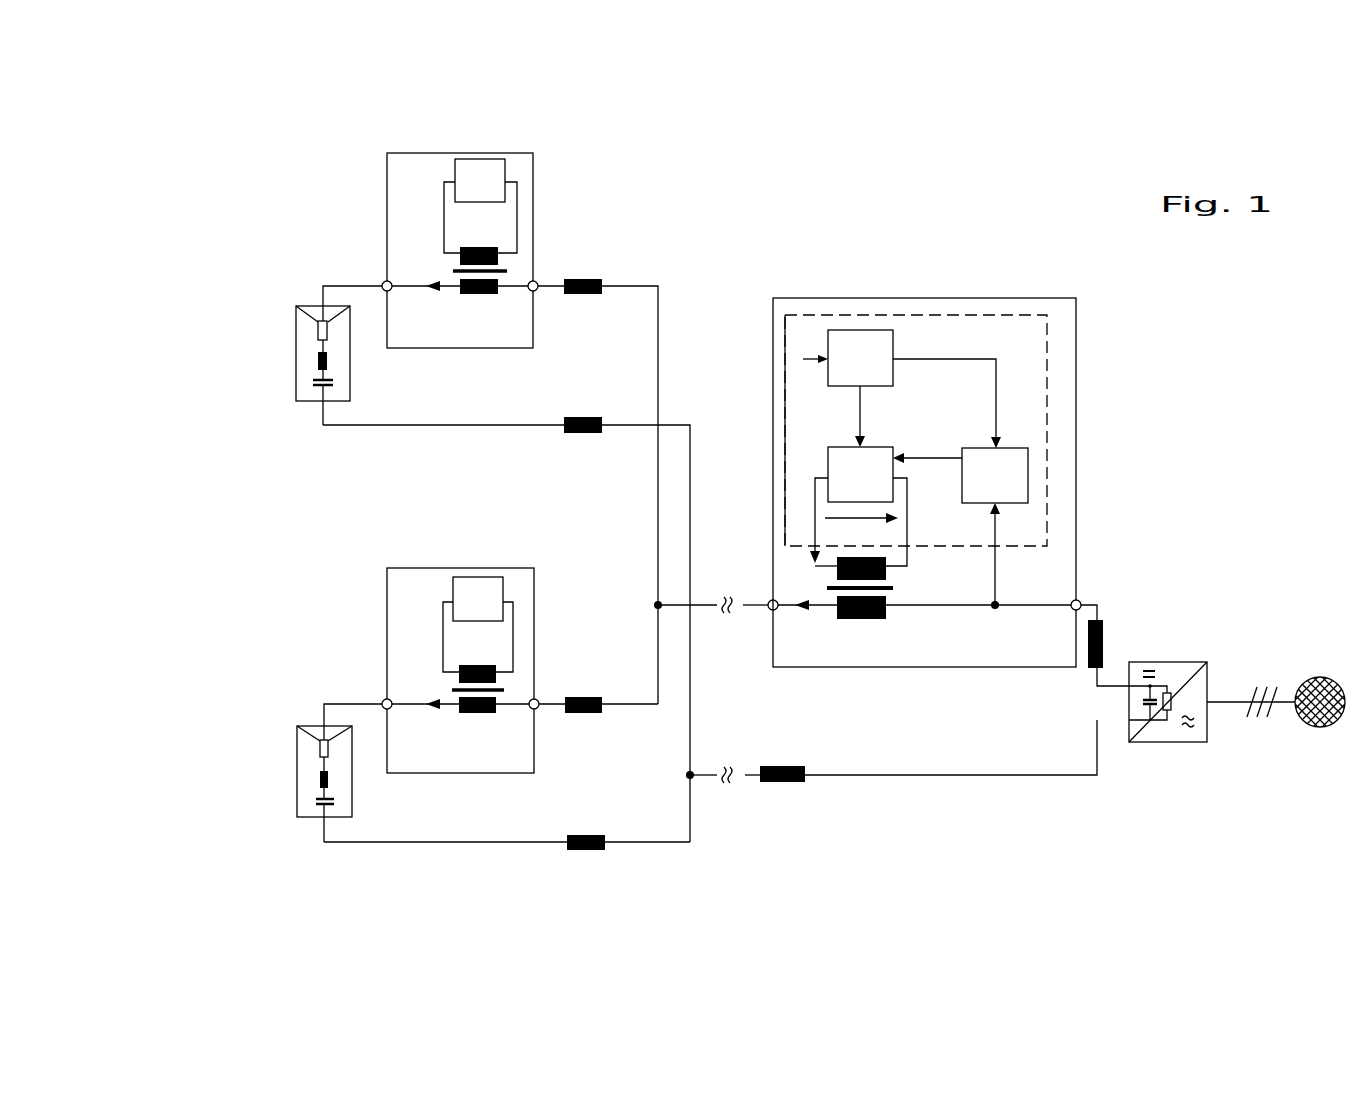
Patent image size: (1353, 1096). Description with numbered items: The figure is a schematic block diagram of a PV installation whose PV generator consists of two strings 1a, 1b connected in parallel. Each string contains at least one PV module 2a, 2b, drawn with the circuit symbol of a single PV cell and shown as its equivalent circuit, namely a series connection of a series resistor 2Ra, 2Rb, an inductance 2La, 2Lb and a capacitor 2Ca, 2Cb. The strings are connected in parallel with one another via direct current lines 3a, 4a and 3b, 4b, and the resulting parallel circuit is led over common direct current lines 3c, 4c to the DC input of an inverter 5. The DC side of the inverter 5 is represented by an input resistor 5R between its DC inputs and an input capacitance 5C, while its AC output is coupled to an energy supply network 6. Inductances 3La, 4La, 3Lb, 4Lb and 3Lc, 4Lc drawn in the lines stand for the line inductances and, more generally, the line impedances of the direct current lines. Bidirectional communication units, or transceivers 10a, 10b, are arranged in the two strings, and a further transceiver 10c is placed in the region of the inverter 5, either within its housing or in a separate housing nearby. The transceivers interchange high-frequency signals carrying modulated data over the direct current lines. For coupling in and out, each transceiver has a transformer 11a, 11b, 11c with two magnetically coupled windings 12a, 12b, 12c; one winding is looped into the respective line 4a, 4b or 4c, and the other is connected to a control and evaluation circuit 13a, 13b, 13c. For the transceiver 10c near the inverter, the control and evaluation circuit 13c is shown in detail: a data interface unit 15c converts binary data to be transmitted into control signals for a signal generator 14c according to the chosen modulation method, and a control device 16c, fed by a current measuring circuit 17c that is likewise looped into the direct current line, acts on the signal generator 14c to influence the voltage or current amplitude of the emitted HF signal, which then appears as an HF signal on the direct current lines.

The string 1a is at (296, 165).
The string 1b is at (309, 534).
The PV module 2a is at (296, 313).
The PV module 2b is at (297, 733).
The series resistor 2Ra is at (318, 333).
The series resistor 2Rb is at (320, 753).
The inductance 2La is at (318, 362).
The inductance 2Lb is at (320, 780).
The capacitor 2Ca is at (333, 382).
The capacitor 2Cb is at (334, 801).
The direct current line 3a is at (547, 426).
The direct current line 3b is at (550, 843).
The common direct current line 3c is at (1040, 776).
The inductance 3La is at (583, 417).
The inductance 3Lb is at (585, 835).
The inductance 3Lc is at (790, 783).
The direct current line 4a is at (552, 288).
The direct current line 4b is at (555, 706).
The common direct current line 4c is at (700, 606).
The inductance 4La is at (583, 279).
The inductance 4Lb is at (580, 698).
The inductance 4Lc is at (1103, 623).
The inverter 5 is at (1177, 662).
The input capacitance 5C is at (1143, 703).
The input resistor 5R is at (1171, 708).
The energy supply network 6 is at (1321, 678).
The transceiver 10a is at (505, 153).
The transceiver 10b is at (495, 568).
The transceiver 10c is at (972, 298).
The transformer 11a is at (440, 264).
The transformer 11b is at (438, 682).
The transformer 11c is at (897, 585).
The windings 12a is at (500, 260).
The windings 12b is at (498, 677).
The windings 12c is at (837, 573).
The control and evaluation circuit 13a is at (502, 175).
The control and evaluation circuit 13b is at (500, 590).
The control and evaluation circuit 13c is at (1053, 348).
The signal generator 14c is at (878, 484).
The data interface unit 15c is at (878, 370).
The control device 16c is at (1012, 487).
The current measuring circuit 17c is at (993, 611).